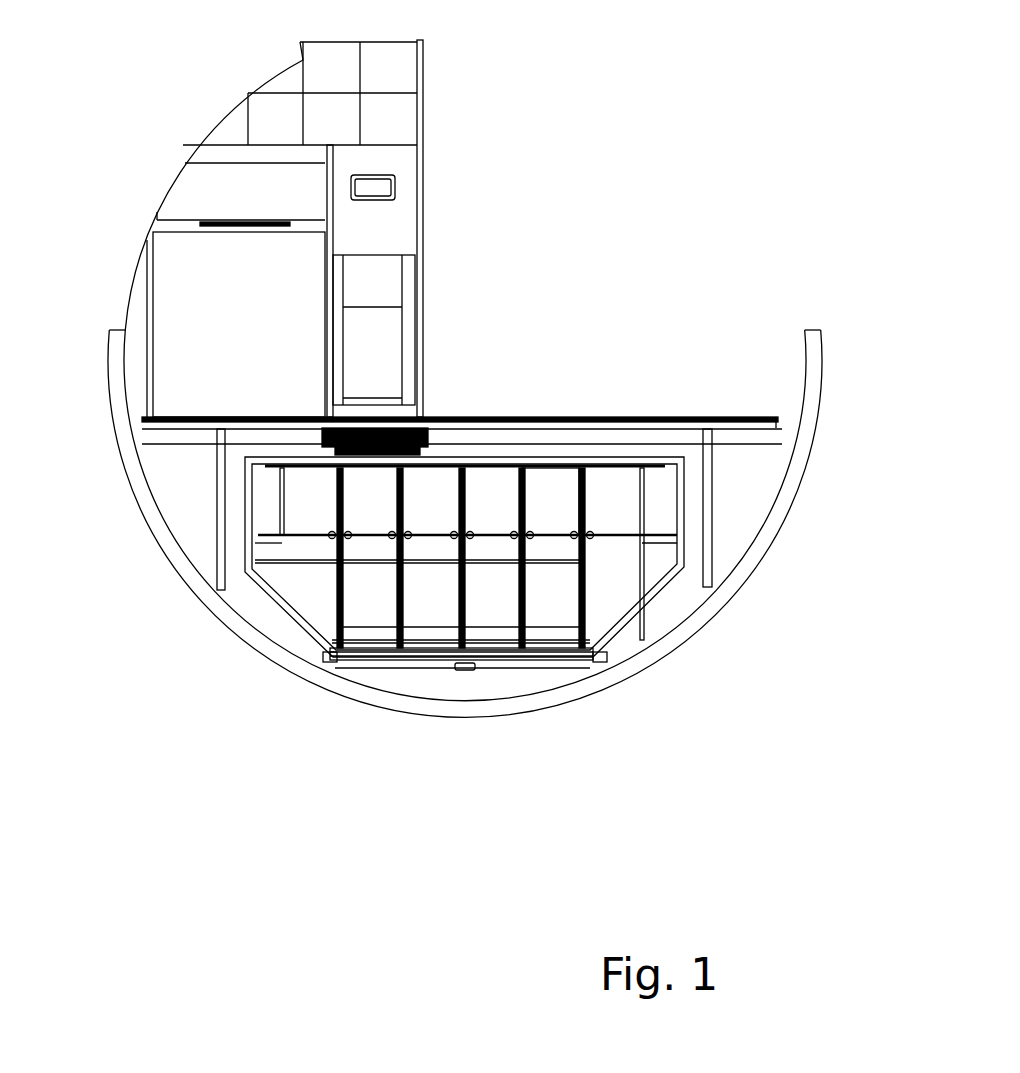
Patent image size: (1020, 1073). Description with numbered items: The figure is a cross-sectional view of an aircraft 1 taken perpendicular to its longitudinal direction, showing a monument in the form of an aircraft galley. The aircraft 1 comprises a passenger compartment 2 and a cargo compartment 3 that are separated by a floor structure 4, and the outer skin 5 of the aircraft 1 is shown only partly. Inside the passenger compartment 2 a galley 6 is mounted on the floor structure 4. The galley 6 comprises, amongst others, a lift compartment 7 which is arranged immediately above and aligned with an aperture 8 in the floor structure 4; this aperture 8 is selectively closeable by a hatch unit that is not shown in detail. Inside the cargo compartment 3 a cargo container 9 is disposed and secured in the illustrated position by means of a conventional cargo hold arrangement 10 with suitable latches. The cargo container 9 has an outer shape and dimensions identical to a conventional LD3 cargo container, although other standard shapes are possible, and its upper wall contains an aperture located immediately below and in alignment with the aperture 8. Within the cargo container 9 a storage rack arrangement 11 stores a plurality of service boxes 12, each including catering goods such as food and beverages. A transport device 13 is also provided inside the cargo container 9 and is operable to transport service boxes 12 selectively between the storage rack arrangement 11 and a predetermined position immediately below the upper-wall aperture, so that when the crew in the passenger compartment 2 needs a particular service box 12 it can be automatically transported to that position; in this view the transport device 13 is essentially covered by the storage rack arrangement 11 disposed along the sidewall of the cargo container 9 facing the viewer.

The aircraft 1 is at (715, 740).
The passenger compartment 2 is at (530, 140).
The cargo compartment 3 is at (738, 472).
The floor structure 4 is at (220, 421).
The outer skin 5 is at (398, 705).
The galley 6 is at (350, 212).
The lift compartment 7 is at (358, 302).
The aperture 8 is at (405, 415).
The cargo container 9 is at (465, 505).
The cargo hold arrangement 10 is at (330, 655).
The storage rack arrangement 11 is at (650, 565).
The service box 12 is at (558, 483).
The transport device 13 is at (283, 527).